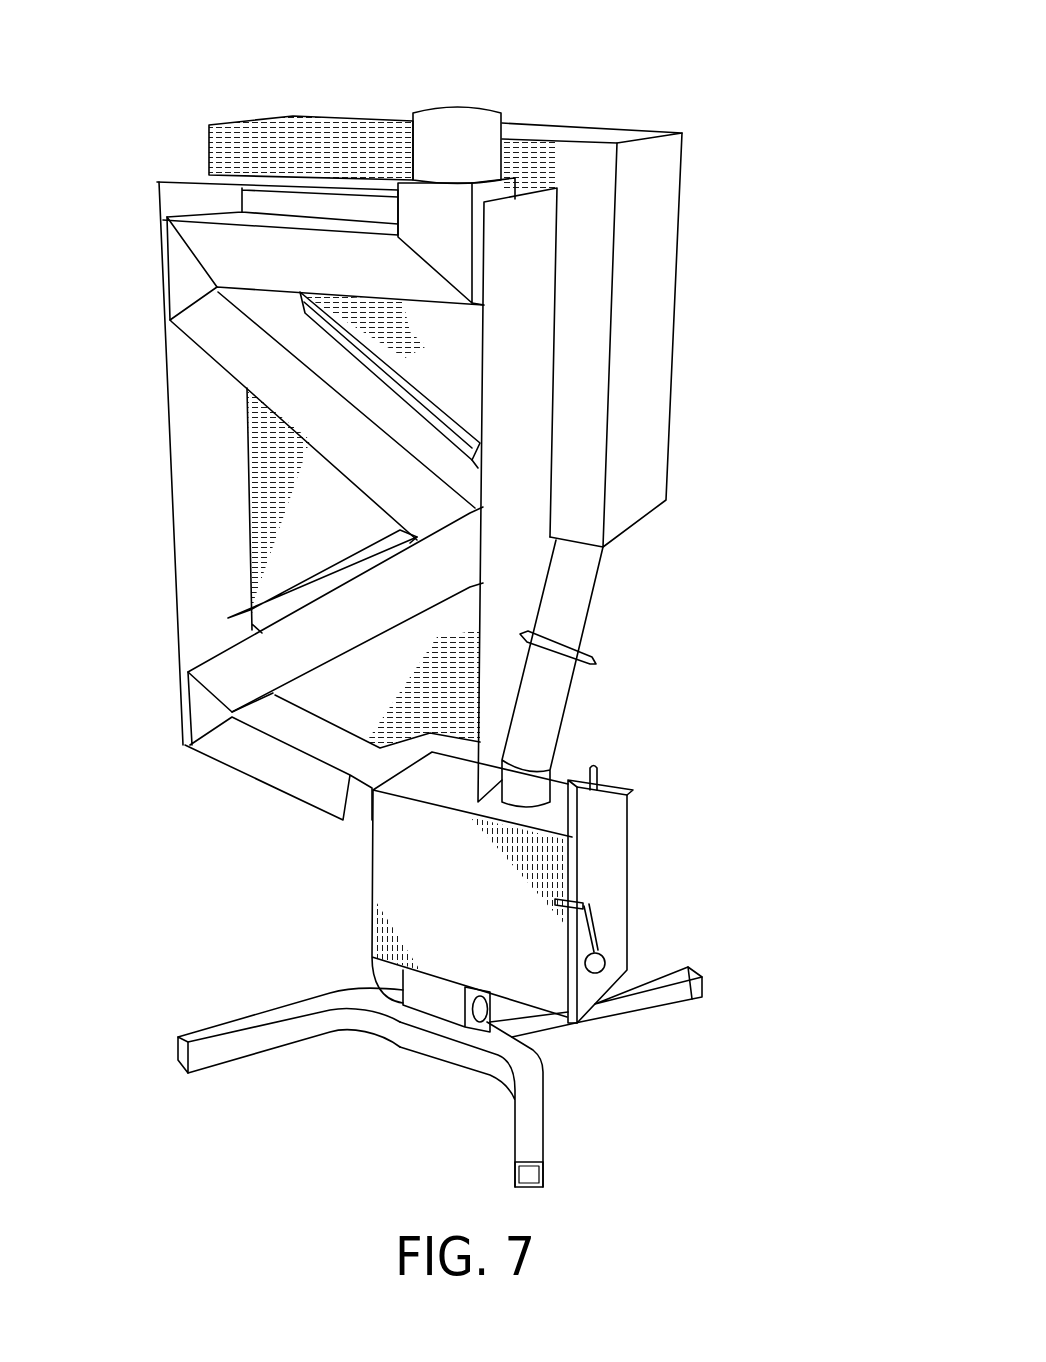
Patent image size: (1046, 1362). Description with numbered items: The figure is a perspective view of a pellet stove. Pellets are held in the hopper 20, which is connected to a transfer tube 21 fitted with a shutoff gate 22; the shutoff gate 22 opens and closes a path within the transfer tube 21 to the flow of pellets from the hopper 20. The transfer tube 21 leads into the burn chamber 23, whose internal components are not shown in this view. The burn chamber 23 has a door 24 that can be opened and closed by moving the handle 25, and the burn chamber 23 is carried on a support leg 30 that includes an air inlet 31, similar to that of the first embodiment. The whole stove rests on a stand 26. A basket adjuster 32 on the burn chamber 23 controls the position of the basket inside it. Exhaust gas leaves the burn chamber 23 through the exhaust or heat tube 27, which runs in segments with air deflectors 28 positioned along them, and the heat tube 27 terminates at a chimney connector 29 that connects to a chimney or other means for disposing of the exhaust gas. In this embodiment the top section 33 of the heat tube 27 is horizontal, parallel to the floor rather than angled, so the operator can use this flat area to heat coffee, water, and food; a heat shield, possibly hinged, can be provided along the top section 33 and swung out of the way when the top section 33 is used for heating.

The hopper 20 is at (656, 241).
The transfer tube 21 is at (580, 588).
The shutoff gate 22 is at (594, 660).
The burn chamber 23 is at (405, 865).
The door 24 is at (613, 866).
The handle 25 is at (603, 960).
The stand 26 is at (528, 1133).
The heat tube 27 is at (217, 672).
The air deflector 28 is at (413, 380).
The chimney connector 29 is at (460, 140).
The support leg 30 is at (440, 997).
The air inlet 31 is at (486, 1016).
The basket adjuster 32 is at (598, 767).
The top section 33 is at (235, 257).